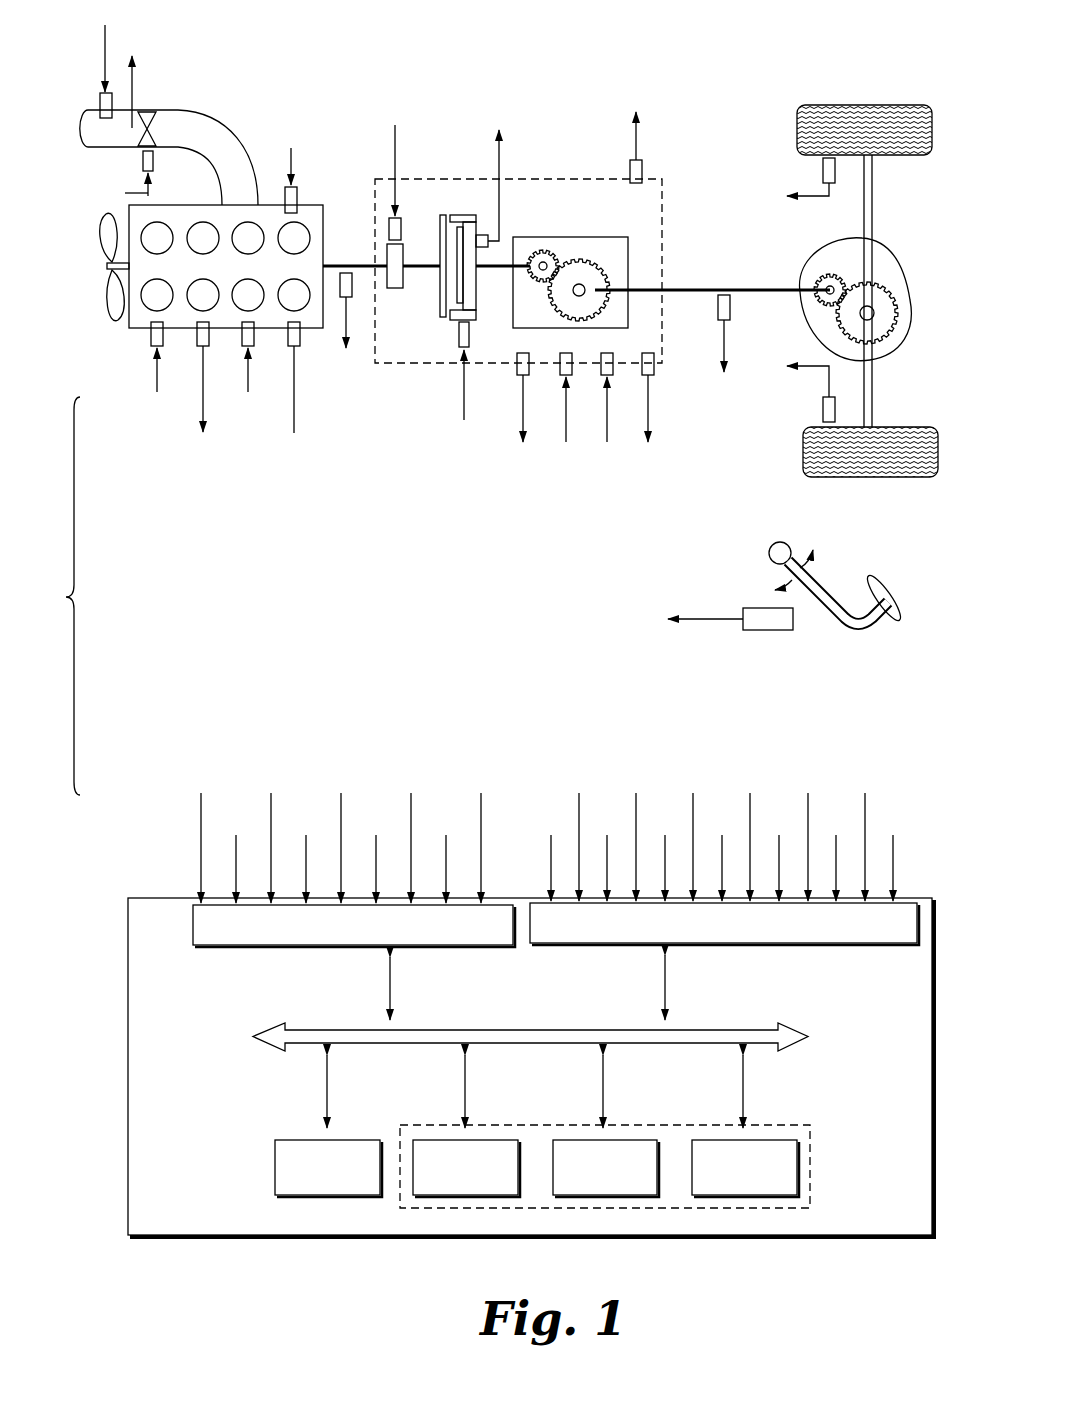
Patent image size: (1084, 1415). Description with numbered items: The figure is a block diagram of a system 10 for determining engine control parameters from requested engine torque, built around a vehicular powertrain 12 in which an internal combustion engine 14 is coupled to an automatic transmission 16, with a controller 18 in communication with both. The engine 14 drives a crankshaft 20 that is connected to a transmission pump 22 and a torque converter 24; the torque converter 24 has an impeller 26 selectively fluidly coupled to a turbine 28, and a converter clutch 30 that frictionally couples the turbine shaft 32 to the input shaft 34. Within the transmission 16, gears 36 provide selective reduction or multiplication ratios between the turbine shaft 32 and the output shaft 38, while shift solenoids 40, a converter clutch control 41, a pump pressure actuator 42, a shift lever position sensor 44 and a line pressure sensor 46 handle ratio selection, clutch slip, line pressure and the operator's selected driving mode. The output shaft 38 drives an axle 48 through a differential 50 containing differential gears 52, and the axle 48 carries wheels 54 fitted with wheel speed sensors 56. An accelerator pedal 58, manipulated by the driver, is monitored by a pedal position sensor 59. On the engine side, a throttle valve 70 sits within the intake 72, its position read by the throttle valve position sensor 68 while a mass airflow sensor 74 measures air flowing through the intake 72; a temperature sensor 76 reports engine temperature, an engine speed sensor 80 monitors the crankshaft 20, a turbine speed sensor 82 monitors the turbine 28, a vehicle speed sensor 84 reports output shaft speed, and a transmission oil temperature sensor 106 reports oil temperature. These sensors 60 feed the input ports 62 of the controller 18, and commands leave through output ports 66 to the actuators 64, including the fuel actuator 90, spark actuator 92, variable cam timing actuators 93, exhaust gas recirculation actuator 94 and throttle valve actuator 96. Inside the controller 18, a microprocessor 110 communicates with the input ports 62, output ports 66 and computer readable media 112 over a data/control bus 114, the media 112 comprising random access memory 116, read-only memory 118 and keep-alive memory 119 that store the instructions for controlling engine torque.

The system 10 is at (65, 596).
The vehicular powertrain 12 is at (276, 366).
The internal combustion engine 14 is at (306, 330).
The automatic transmission 16 is at (663, 197).
The controller 18 is at (845, 1235).
The crankshaft 20 is at (345, 262).
The transmission pump 22 is at (398, 288).
The torque converter 24 is at (437, 332).
The impeller 26 is at (438, 230).
The turbine 28 is at (470, 300).
The converter clutch 30 is at (460, 213).
The turbine shaft 32 is at (490, 270).
The input shaft 34 is at (416, 270).
The gears 36 is at (563, 250).
The output shaft 38 is at (690, 282).
The shift solenoids 40 is at (600, 442).
The converter clutch control 41 is at (457, 337).
The pump pressure actuator 42 is at (403, 233).
The shift lever position sensor 44 is at (642, 167).
The line pressure sensor 46 is at (648, 413).
The axle 48 is at (873, 196).
The differential 50 is at (865, 309).
The differential gears 52 is at (900, 335).
The wheels 54 is at (878, 478).
The wheel speed sensors 56 is at (817, 420).
The accelerator pedal 58 is at (887, 590).
The pedal position sensor 59 is at (768, 630).
The sensors 60 is at (734, 847).
The input ports 62 is at (818, 944).
The actuators 64 is at (316, 808).
The output ports 66 is at (257, 948).
The throttle valve position sensor 68 is at (132, 80).
The throttle valve 70 is at (150, 145).
The intake 72 is at (230, 135).
The mass airflow sensor 74 is at (105, 50).
The temperature sensor 76 is at (203, 397).
The engine speed sensor 80 is at (352, 290).
The turbine speed sensor 82 is at (483, 233).
The vehicle speed sensor 84 is at (718, 305).
The fuel actuator 90 is at (157, 385).
The spark actuator 92 is at (250, 392).
The intake/exhaust valve actuators 93 is at (294, 422).
The exhaust gas recirculation actuator 94 is at (298, 195).
The throttle valve actuator 96 is at (143, 163).
The transmission oil temperature sensor 106 is at (523, 420).
The microprocessor 110 is at (300, 1140).
The computer readable media 112 is at (627, 1131).
The data/control bus 114 is at (535, 1028).
The random access memory 116 is at (773, 1138).
The read-only memory 118 is at (633, 1138).
The keep-alive memory 119 is at (442, 1140).